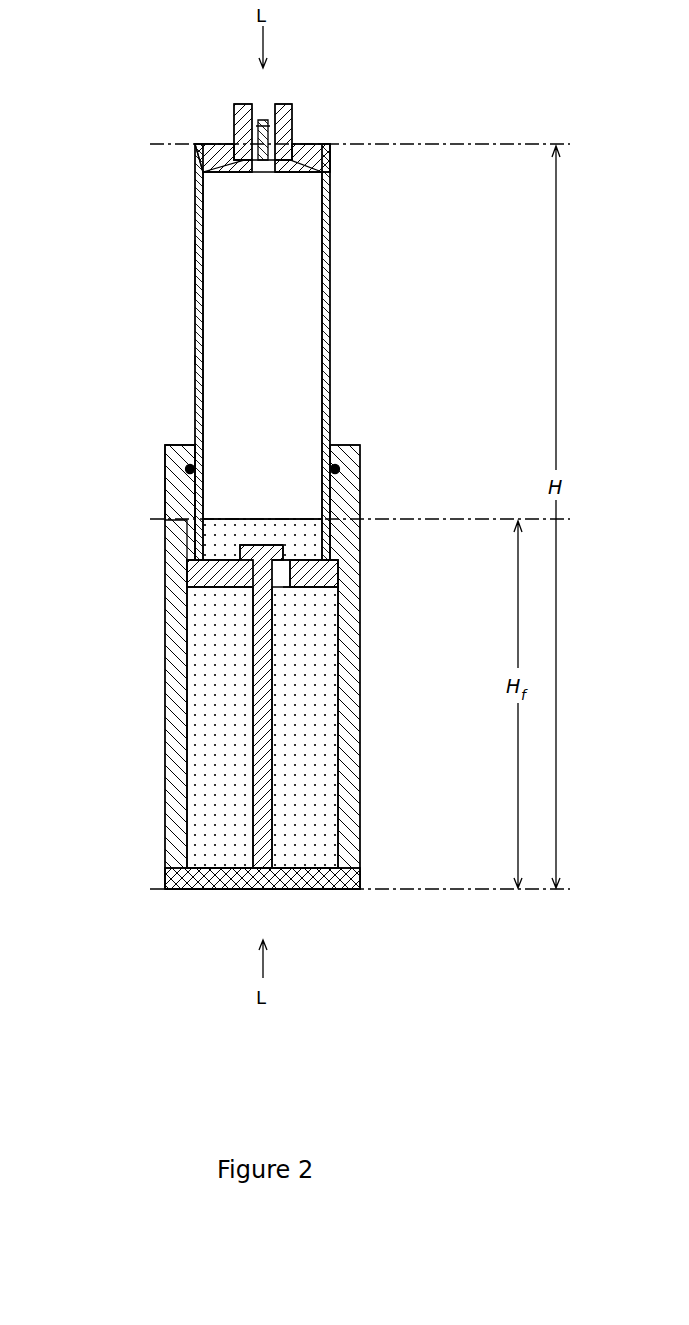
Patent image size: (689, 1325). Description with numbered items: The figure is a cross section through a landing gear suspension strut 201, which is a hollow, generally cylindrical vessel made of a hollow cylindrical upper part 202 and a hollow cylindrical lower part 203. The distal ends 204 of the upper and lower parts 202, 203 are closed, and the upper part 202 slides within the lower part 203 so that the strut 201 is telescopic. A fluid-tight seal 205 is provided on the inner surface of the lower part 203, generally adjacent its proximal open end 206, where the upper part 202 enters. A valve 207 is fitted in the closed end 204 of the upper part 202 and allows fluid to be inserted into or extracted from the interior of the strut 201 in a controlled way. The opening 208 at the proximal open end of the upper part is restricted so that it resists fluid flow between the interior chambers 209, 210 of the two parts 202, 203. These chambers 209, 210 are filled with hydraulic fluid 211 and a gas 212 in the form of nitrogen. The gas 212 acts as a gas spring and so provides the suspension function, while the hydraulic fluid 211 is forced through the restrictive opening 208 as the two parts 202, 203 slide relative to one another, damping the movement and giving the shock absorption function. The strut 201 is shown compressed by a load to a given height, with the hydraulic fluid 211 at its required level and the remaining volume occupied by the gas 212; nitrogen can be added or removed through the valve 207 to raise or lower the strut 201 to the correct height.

The suspension strut 201 is at (195, 360).
The upper part 202 is at (332, 322).
The lower part 203 is at (352, 742).
The distal end 204 is at (322, 156).
The fluid-tight seal 205 is at (340, 470).
The proximal open end 206 is at (195, 445).
The valve 207 is at (285, 104).
The opening 208 is at (290, 595).
The interior chamber 209 is at (205, 298).
The interior chamber 210 is at (187, 745).
The hydraulic fluid 211 is at (210, 630).
The gas 212 is at (272, 240).